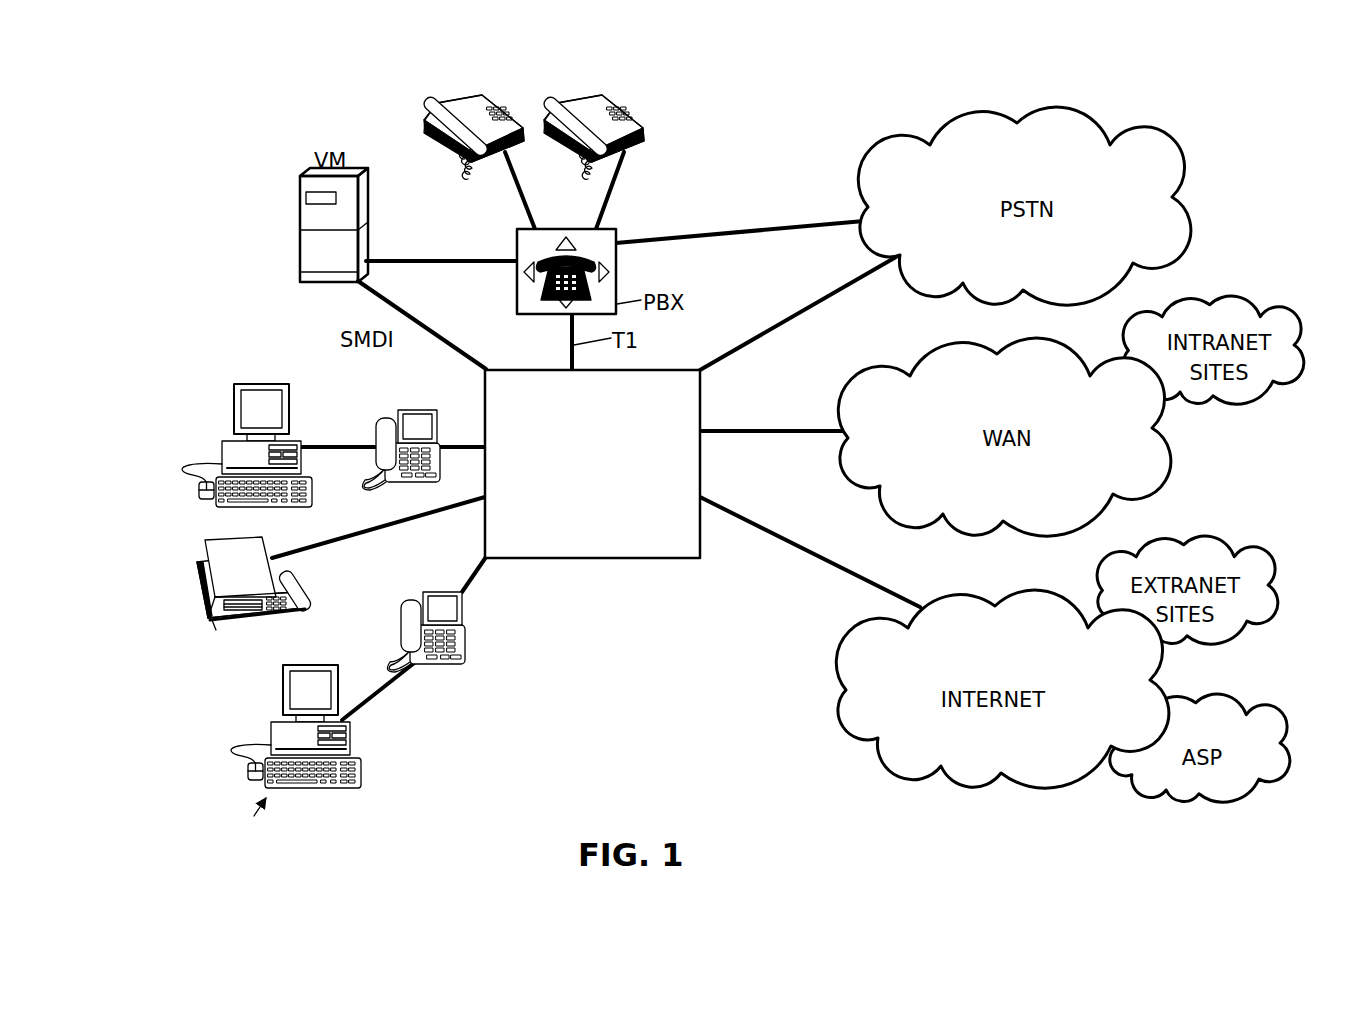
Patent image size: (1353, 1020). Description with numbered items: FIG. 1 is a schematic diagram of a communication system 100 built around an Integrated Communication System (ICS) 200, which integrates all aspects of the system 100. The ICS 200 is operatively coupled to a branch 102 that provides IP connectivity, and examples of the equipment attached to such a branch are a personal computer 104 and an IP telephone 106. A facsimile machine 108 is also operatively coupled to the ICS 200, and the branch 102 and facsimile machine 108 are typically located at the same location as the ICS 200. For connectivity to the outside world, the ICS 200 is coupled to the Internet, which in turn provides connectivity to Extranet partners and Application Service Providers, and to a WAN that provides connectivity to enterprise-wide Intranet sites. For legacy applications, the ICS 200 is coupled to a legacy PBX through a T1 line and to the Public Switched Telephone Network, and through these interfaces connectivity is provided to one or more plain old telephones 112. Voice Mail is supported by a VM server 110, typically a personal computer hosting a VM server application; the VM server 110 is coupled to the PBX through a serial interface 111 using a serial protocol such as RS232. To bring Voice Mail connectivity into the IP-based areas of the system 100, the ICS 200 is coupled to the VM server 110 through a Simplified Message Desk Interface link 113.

The communication system 100 is at (211, 124).
The branch 102 is at (193, 457).
The personal computer 104 is at (235, 387).
The IP telephone 106 is at (400, 410).
The facsimile machine 108 is at (220, 620).
The VM server 110 is at (300, 232).
The serial interface 111 is at (420, 257).
The POTS telephone 112 is at (428, 113).
The SMDI link 113 is at (440, 331).
The Integrated Communication System 200 is at (643, 585).